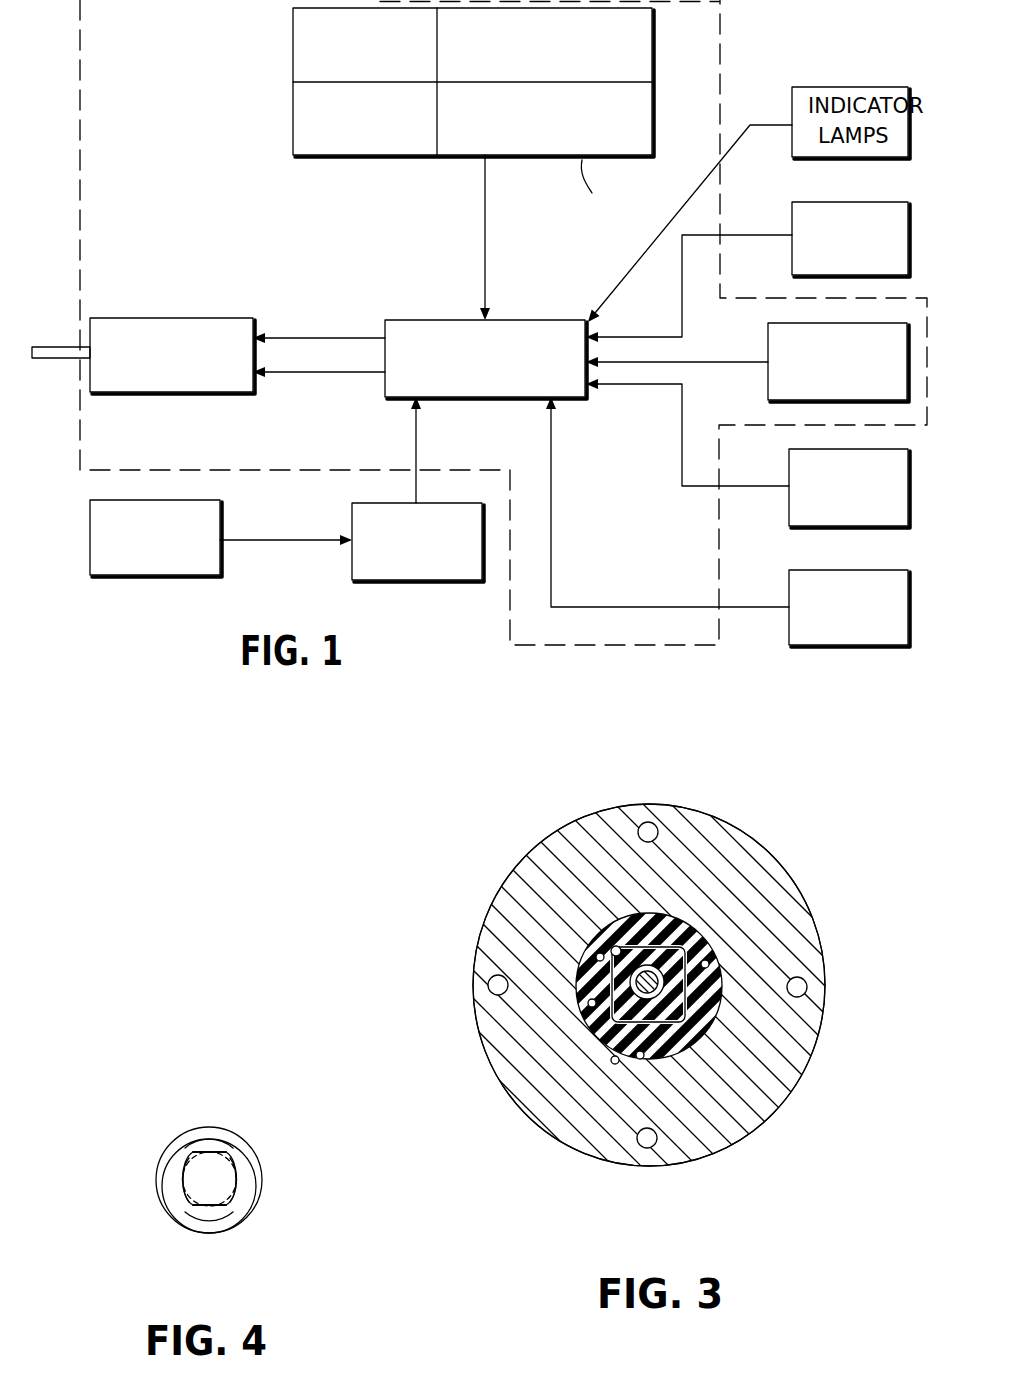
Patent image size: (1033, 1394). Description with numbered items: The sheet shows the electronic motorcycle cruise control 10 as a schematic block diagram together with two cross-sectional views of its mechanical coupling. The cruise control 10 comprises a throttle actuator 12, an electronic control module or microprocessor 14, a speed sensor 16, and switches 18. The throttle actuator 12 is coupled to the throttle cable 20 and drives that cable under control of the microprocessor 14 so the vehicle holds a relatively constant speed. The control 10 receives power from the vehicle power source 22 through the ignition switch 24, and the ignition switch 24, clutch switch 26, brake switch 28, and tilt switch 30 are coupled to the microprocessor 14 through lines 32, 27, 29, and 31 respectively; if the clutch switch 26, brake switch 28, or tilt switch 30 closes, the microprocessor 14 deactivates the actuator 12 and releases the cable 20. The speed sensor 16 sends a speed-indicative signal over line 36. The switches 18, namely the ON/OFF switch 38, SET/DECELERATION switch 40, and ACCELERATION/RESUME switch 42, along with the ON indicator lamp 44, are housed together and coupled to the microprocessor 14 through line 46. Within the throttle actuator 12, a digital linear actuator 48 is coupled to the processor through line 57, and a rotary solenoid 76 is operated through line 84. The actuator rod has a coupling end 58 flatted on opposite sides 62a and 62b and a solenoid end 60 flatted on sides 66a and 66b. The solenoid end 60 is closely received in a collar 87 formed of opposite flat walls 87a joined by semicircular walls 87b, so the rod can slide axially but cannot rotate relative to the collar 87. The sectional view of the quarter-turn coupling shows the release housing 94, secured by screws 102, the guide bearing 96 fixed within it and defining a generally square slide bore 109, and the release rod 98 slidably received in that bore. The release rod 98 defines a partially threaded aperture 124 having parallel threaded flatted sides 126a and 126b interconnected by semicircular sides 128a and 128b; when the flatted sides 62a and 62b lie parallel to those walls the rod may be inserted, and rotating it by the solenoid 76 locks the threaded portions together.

In FIG. 1, the cruise control 10 is at (614, 650).
In FIG. 1, the throttle actuator 12 is at (234, 312).
In FIG. 3, the throttle actuator 12 is at (398, 912).
In FIG. 1, the electronic control module or microprocessor 14 is at (547, 316).
In FIG. 1, the speed sensor 16 is at (778, 317).
In FIG. 1, the switches 18 is at (527, 82).
In FIG. 1, the throttle cable 20 is at (53, 346).
In FIG. 1, the vehicle electrical system or power source 22 is at (117, 565).
In FIG. 1, the ignition switch 24 is at (465, 513).
In FIG. 1, the clutch switch 26 is at (802, 212).
In FIG. 1, the line 27 is at (745, 235).
In FIG. 1, the brake switch 28 is at (800, 459).
In FIG. 1, the line 29 is at (747, 487).
In FIG. 1, the tilt switch 30 is at (800, 580).
In FIG. 1, the line 31 is at (738, 612).
In FIG. 1, the line 32 is at (416, 447).
In FIG. 1, the line / common housing 36 is at (700, 362).
In FIG. 1, the ON/OFF switch 38 is at (429, 32).
In FIG. 1, the SET/DECELERATION switch 40 is at (643, 34).
In FIG. 1, the ACCELERATION/RESUME switch 42 is at (643, 114).
In FIG. 1, the ON indicator lamp 44 is at (429, 110).
In FIG. 1, the line 46 is at (485, 236).
In FIG. 1, the digital linear actuator 48 is at (148, 328).
In FIG. 1, the line 57 is at (302, 340).
In FIG. 3, the coupling end 58 is at (590, 1050).
In FIG. 4, the solenoid end 60 is at (215, 1180).
In FIG. 3, the flatted side 62a is at (697, 927).
In FIG. 3, the flatted side 62b is at (690, 1048).
In FIG. 4, the flatted side 66a is at (213, 1152).
In FIG. 4, the flatted side 66b is at (200, 1205).
In FIG. 1, the rotary solenoid 76 is at (118, 392).
In FIG. 1, the line 84 is at (302, 378).
In FIG. 4, the collar 87 is at (262, 1145).
In FIG. 4, the flat walls 87a is at (202, 1147).
In FIG. 4, the semicircular walls 87b is at (160, 1178).
In FIG. 3, the release housing 94 is at (720, 845).
In FIG. 3, the guide bearing 96 is at (632, 1066).
In FIG. 3, the release rod 98 is at (630, 945).
In FIG. 3, the screws 102 is at (650, 829).
In FIG. 3, the slide bore 109 is at (700, 1010).
In FIG. 3, the partially threaded aperture 124 is at (705, 947).
In FIG. 3, the threaded flatted side 126a is at (600, 955).
In FIG. 3, the threaded flatted side 126b is at (613, 1065).
In FIG. 3, the semicircular side 128a is at (580, 1002).
In FIG. 3, the semicircular side 128b is at (720, 967).